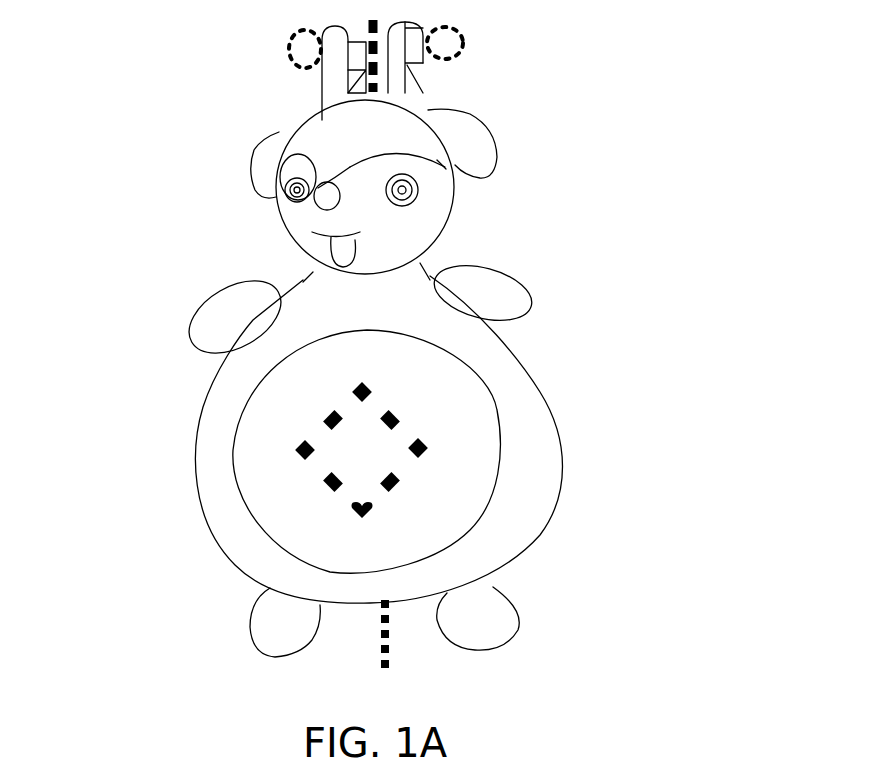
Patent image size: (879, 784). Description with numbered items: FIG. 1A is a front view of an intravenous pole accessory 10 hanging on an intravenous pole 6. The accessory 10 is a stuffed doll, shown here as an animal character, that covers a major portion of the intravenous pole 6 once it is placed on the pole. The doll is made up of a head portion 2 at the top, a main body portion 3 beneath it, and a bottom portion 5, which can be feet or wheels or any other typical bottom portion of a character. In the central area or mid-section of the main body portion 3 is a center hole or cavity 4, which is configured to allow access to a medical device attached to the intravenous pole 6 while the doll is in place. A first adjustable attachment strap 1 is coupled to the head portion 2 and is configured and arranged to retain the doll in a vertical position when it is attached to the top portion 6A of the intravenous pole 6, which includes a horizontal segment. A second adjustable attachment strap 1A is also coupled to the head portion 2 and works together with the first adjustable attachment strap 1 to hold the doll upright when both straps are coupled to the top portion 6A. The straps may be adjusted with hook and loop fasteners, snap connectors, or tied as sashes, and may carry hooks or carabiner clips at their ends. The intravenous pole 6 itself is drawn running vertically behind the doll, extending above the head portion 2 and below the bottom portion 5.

The intravenous pole accessory 10 is at (422, 369).
The first adjustable attachment strap 1 is at (392, 77).
The second adjustable attachment strap 1A is at (333, 80).
The top portion of the intravenous pole 6A is at (292, 47).
The head portion 2 is at (455, 200).
The main body portion 3 is at (515, 345).
The center hole or cavity 4 is at (422, 444).
The bottom portion 5 is at (497, 604).
The intravenous pole 6 is at (393, 667).